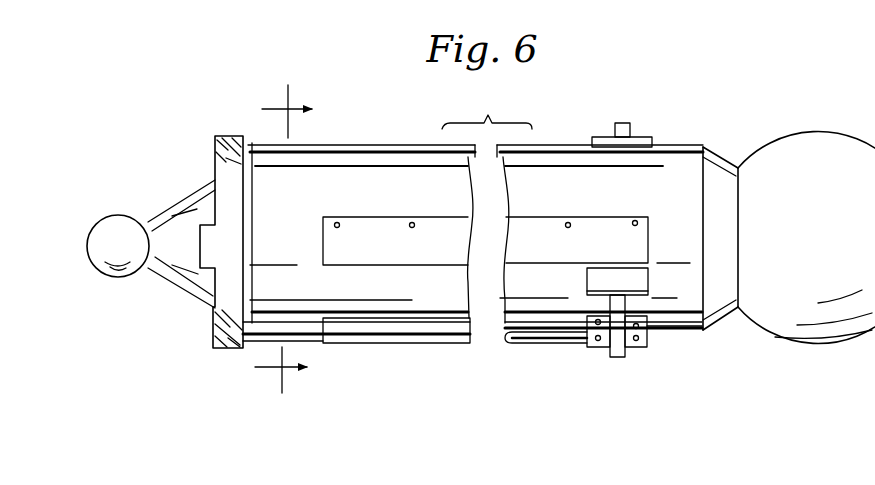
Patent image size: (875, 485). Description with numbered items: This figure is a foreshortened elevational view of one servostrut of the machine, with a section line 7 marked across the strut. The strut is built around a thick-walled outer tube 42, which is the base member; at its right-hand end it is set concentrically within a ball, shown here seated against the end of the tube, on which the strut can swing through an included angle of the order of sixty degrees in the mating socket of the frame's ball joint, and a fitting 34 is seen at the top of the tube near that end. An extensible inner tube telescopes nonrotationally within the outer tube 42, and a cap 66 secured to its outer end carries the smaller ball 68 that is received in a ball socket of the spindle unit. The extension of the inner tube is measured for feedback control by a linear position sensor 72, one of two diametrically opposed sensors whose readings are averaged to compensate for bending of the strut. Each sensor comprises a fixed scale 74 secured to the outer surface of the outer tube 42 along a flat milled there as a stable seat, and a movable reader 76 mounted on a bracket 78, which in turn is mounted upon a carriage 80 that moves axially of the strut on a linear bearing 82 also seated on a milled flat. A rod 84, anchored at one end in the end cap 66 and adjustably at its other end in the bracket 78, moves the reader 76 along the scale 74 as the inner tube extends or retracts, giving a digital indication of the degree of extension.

The section line 7- 7 is at (283, 241).
The bolt block 34 is at (689, 143).
The outer tube 42 is at (643, 209).
The cap 66 is at (225, 192).
The smaller ball 68 is at (104, 258).
The linear position sensor 72 is at (553, 211).
The scale 74 is at (523, 261).
The reader 76 is at (617, 283).
The bracket 78 is at (616, 338).
The carriage 80 is at (647, 344).
The linear bearing 82 is at (506, 333).
The rod 84 is at (421, 333).